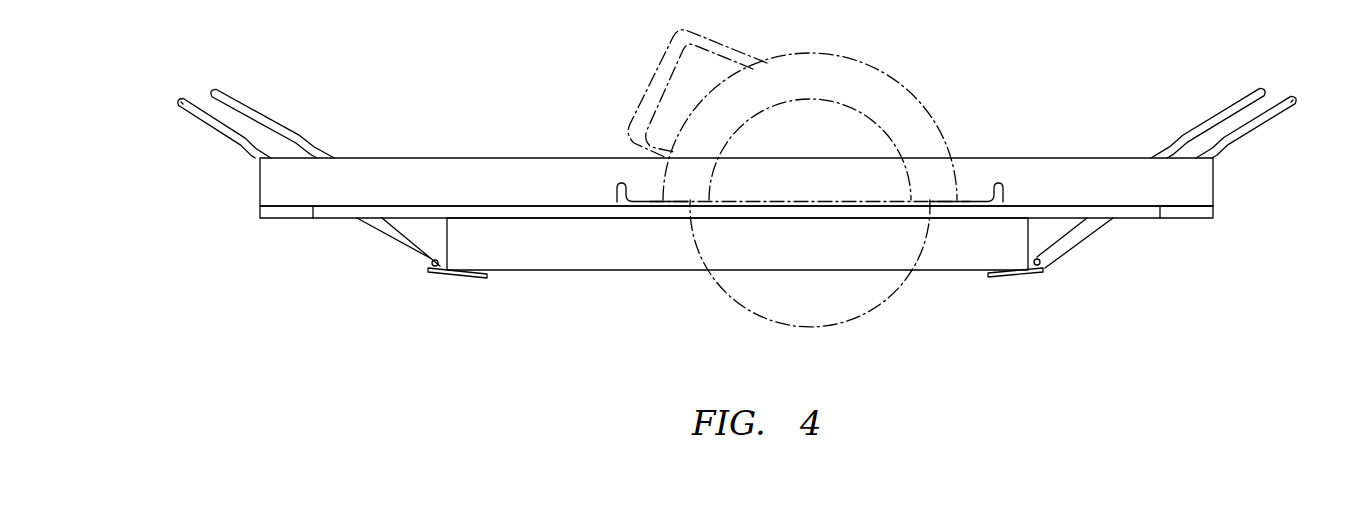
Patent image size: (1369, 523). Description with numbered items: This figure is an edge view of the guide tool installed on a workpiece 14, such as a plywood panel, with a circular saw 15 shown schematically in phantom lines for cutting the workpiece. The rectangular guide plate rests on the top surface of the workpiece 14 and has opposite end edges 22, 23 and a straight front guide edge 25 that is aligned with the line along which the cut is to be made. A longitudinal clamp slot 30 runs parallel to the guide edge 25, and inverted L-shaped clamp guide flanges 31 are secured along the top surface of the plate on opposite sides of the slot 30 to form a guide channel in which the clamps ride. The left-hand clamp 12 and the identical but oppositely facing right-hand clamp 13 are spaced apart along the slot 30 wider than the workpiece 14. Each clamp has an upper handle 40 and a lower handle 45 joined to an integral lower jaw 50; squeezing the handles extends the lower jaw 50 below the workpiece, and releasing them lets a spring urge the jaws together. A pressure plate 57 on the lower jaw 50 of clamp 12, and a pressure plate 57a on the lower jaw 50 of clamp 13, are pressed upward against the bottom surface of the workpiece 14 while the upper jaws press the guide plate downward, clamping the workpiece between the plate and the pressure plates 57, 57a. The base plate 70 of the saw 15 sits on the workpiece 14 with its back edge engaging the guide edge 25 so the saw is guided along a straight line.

The clamp 12 is at (310, 145).
The clamp 13 is at (1217, 112).
The workpiece 14 is at (550, 255).
The circular saw 15 is at (885, 77).
The first end edge 22 is at (260, 211).
The second end edge 23 is at (1215, 210).
The front guide edge 25 is at (327, 213).
The clamp slot 30 is at (1140, 210).
The clamp guide flange 31 is at (270, 183).
The upper handle 40 is at (212, 90).
The lower handle 45 is at (180, 100).
The lower jaw 50 is at (398, 240).
The pressure plate 57 is at (458, 278).
The pressure plate 57a is at (1005, 275).
The base plate 70 is at (647, 198).